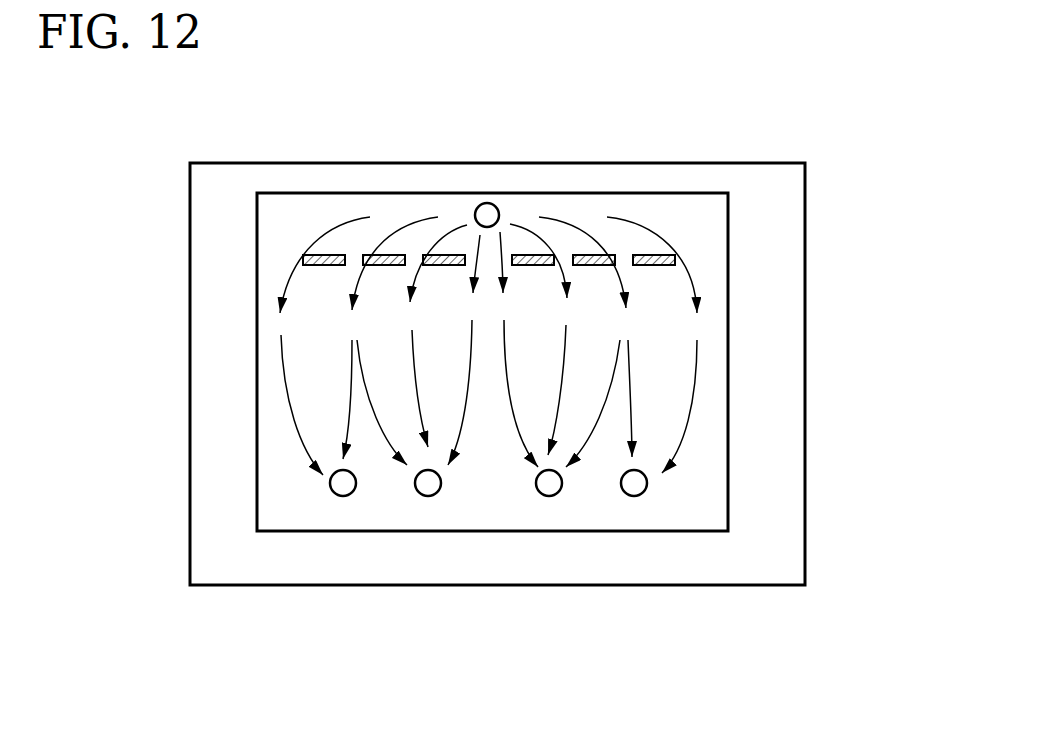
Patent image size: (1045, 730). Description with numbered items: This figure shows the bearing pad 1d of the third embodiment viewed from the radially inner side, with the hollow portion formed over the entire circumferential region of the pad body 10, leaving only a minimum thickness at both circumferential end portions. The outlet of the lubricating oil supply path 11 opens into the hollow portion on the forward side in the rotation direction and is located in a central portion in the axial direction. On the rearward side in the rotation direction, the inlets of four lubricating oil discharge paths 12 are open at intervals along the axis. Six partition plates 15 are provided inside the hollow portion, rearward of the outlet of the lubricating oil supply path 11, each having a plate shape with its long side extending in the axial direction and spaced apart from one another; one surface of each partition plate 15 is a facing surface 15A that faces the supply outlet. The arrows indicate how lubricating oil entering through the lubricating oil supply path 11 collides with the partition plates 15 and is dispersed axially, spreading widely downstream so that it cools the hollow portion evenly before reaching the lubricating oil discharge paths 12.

The bearing pad 1d is at (486, 341).
The pad body 10 is at (789, 460).
The lubricating oil supply path 11 is at (500, 205).
The lubricating oil discharge path 12 is at (336, 497).
The partition plate 15 is at (485, 196).
The facing surface 15A is at (653, 253).